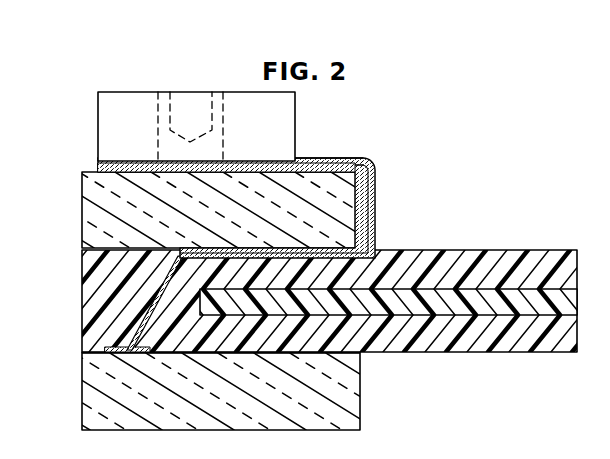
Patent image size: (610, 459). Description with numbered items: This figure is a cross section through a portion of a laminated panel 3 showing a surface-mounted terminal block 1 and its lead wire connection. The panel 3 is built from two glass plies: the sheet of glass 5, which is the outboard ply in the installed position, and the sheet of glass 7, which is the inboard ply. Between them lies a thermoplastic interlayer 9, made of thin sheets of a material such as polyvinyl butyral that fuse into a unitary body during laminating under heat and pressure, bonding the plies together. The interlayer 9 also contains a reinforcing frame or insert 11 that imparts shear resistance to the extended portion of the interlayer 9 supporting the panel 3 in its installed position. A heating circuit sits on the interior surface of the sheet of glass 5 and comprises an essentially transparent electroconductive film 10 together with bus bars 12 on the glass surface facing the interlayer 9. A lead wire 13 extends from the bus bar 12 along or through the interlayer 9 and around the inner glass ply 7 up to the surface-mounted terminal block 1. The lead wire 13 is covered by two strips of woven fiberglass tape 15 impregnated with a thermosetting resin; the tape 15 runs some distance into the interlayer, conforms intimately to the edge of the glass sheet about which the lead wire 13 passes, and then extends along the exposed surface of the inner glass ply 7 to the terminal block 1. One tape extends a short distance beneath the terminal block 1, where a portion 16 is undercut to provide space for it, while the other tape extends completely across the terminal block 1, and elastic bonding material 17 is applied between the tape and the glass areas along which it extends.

The surface-mounted terminal block 1 is at (295, 104).
The panel 3 is at (383, 236).
The sheet of glass 5 is at (82, 392).
The sheet of glass 7 is at (90, 218).
The thermoplastic interlayer 9 is at (82, 300).
The electroconductive film 10 is at (82, 352).
The reinforcing frame or insert 11 is at (485, 300).
The bus bars 12 is at (110, 347).
The lead wire 13 is at (82, 268).
The woven fiberglass tape 15 is at (332, 157).
The undercut portion 16 is at (300, 157).
The elastic bonding material 17 is at (96, 176).